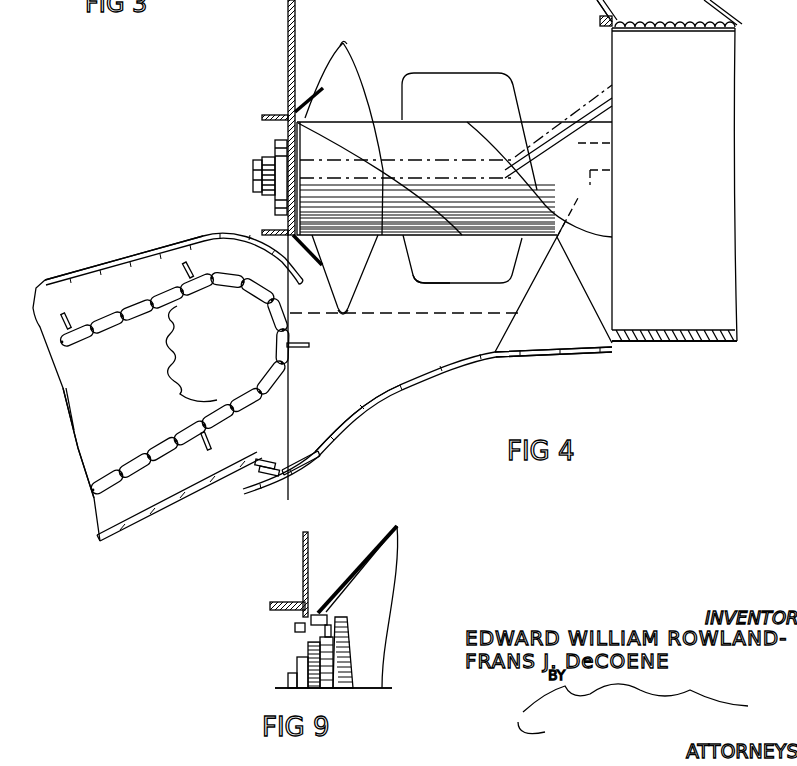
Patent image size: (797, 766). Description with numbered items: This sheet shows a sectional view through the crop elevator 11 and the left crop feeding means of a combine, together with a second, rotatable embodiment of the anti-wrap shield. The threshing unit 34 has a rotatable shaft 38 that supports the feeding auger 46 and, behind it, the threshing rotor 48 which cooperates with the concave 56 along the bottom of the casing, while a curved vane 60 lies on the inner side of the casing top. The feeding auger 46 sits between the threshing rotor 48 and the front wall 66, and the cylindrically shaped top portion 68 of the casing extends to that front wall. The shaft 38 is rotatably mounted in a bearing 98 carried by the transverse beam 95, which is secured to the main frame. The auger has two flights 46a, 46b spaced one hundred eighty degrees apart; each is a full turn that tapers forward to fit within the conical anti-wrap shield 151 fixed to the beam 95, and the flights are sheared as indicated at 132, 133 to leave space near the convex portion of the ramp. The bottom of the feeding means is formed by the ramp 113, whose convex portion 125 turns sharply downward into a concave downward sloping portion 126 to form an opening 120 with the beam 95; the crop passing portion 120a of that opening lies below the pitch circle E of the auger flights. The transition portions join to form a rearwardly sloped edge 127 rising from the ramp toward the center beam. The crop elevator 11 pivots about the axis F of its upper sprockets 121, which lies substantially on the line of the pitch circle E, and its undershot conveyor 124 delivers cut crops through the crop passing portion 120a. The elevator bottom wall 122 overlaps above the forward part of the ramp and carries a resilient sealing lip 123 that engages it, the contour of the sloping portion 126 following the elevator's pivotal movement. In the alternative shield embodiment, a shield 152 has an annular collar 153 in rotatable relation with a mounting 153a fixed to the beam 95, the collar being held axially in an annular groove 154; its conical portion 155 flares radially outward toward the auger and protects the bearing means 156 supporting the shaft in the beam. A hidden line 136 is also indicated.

In FIG. 4, the crop elevator 11 is at (139, 246).
In FIG. 4, the unit 34 is at (698, 342).
In FIG. 4, the rotatable shaft 38 is at (390, 118).
In FIG. 4, the feeding auger 46 is at (427, 36).
In FIG. 4, the flight 46a is at (343, 45).
In FIG. 4, the flight 46b is at (349, 306).
In FIG. 4, the threshing rotor 48 is at (684, 62).
In FIG. 4, the concave 56 is at (666, 340).
In FIG. 4, the curved vane 60 is at (598, 6).
In FIG. 4, the front wall 66 is at (288, 70).
In FIG. 4, the cylindrically shaped top portion 68 is at (349, 0).
In FIG. 4, the transverse beam 95 is at (265, 121).
In FIG. 9, the transverse beam 95 is at (282, 611).
In FIG. 4, the bearing 98 is at (256, 180).
In FIG. 4, the ramp 113 is at (340, 451).
In FIG. 4, the opening 120 is at (291, 287).
In FIG. 4, the crop passing portion 120a is at (286, 423).
In FIG. 4, the upper sprocket 121 is at (176, 385).
In FIG. 4, the bottom wall 122 is at (140, 527).
In FIG. 4, the resilient sealing lip 123 is at (298, 463).
In FIG. 4, the undershot conveyor 124 is at (148, 448).
In FIG. 4, the convex portion 125 is at (495, 353).
In FIG. 4, the downward sloping portion 126 is at (370, 415).
In FIG. 4, the rearwardly sloped edge 127 is at (527, 288).
In FIG. 4, the sheared flight portion 132 is at (477, 73).
In FIG. 4, the sheared flight portion 133 is at (448, 283).
In FIG. 4, the hidden shaft line 136 is at (612, 143).
In FIG. 4, the anti-wrap shield 151 is at (315, 247).
In FIG. 9, the shield 152 is at (347, 598).
In FIG. 9, the annular collar 153 is at (318, 612).
In FIG. 9, the mounting 153a is at (305, 656).
In FIG. 9, the annular groove 154 is at (360, 629).
In FIG. 9, the conical portion 155 is at (385, 540).
In FIG. 9, the bearing means 156 is at (318, 673).
In FIG. 4, the pitch circle E is at (397, 318).
In FIG. 4, the axis F is at (228, 338).